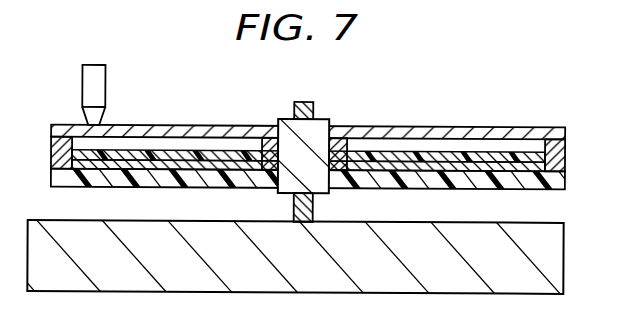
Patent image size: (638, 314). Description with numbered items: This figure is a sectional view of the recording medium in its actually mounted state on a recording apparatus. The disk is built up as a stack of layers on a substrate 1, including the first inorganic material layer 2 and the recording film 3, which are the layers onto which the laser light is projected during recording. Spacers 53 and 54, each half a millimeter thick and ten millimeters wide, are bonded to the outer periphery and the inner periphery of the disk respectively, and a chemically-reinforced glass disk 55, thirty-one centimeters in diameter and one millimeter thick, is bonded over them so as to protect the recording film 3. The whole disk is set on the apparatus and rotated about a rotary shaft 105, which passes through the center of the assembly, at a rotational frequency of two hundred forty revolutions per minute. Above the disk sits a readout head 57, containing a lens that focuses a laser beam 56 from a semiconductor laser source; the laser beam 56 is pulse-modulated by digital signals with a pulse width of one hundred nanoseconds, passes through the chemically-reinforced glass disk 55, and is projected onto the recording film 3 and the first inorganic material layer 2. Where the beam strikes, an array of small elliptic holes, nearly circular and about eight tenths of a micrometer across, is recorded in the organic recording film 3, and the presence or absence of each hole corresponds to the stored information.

The substrate layer 1 is at (557, 182).
The first inorganic material layer 2 is at (381, 168).
The recording film 3 is at (427, 161).
The spacer 53 is at (557, 153).
The spacer 54 is at (339, 146).
The chemically-reinforced glass disk 55 is at (490, 131).
The laser beam 56 is at (87, 122).
The readout head 57 is at (98, 100).
The rotary shaft 105 is at (313, 202).